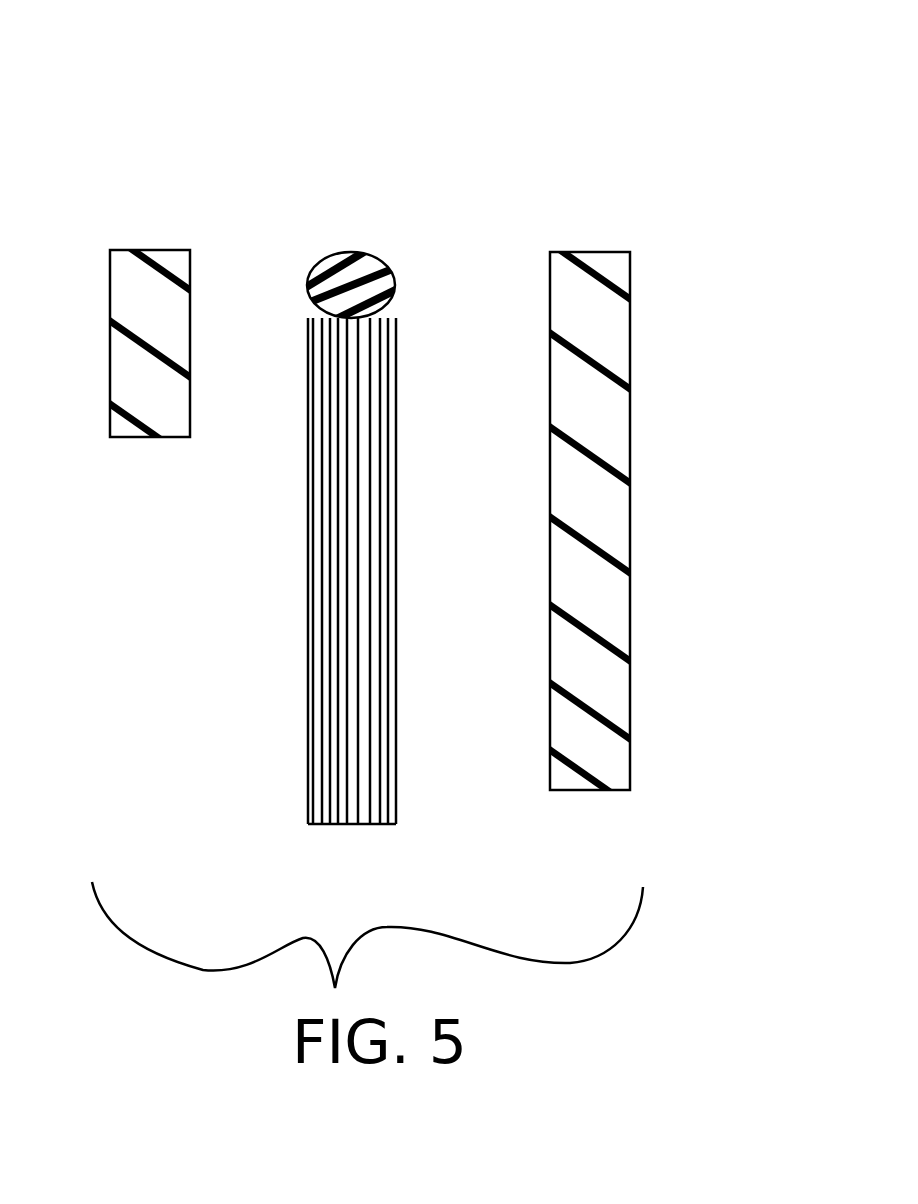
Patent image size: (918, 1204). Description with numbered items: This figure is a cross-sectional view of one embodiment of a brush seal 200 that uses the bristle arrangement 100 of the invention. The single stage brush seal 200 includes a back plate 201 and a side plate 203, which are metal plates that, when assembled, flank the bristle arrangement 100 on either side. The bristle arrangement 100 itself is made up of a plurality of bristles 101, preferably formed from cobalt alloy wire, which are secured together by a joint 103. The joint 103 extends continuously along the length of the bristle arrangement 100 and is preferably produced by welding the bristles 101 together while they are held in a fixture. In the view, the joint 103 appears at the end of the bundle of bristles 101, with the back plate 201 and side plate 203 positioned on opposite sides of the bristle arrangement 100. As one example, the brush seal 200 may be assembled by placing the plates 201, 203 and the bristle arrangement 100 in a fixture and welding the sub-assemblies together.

The brush seal 200 is at (676, 128).
The back plate 201 is at (633, 427).
The side plate 203 is at (163, 438).
The bristle arrangement 100 is at (371, 240).
The bristles 101 is at (398, 692).
The joint 103 is at (394, 278).